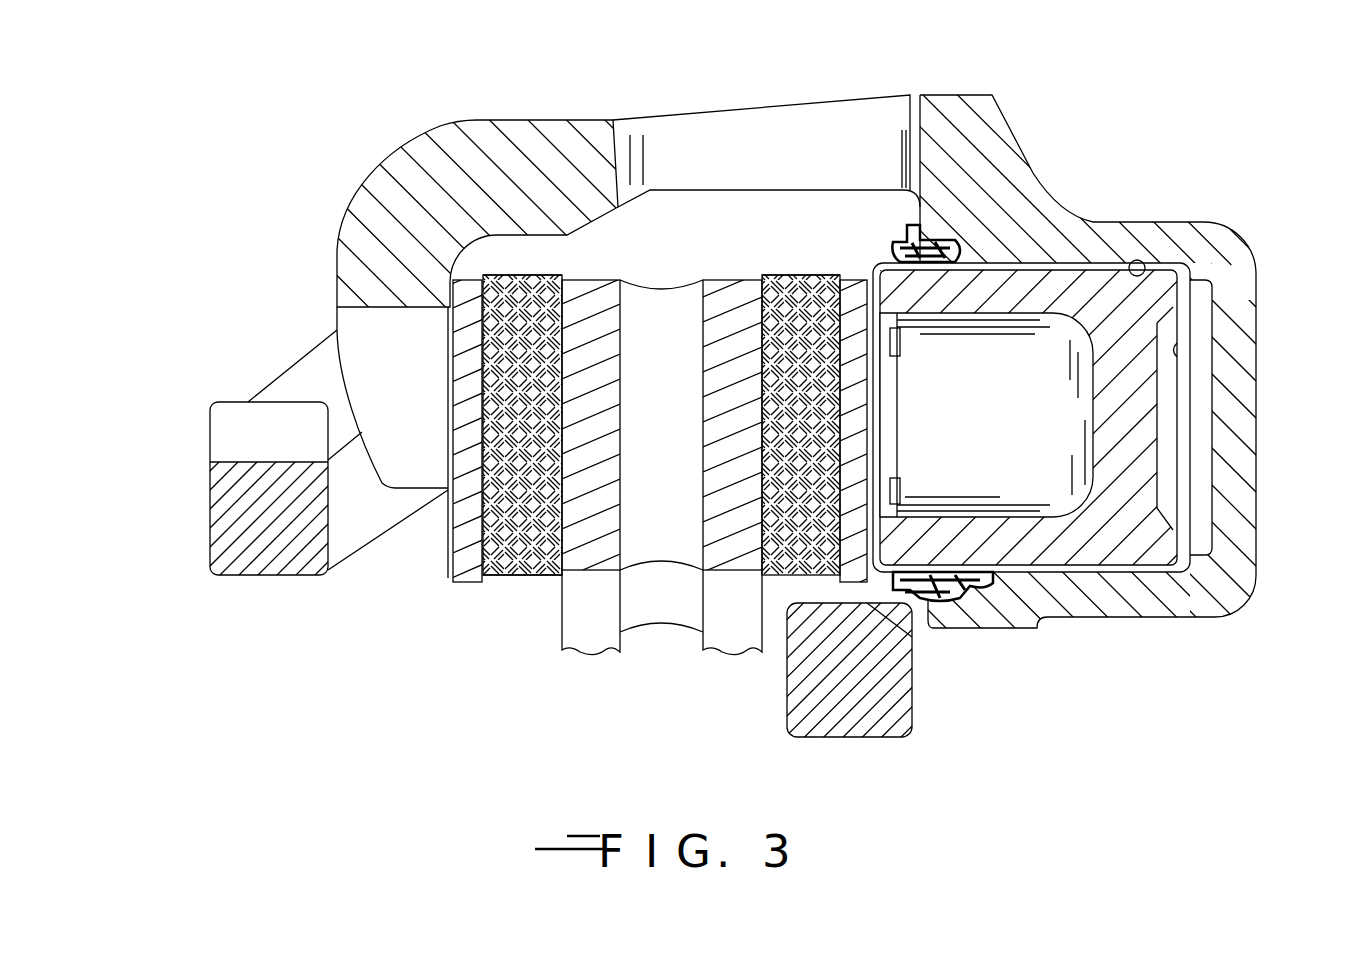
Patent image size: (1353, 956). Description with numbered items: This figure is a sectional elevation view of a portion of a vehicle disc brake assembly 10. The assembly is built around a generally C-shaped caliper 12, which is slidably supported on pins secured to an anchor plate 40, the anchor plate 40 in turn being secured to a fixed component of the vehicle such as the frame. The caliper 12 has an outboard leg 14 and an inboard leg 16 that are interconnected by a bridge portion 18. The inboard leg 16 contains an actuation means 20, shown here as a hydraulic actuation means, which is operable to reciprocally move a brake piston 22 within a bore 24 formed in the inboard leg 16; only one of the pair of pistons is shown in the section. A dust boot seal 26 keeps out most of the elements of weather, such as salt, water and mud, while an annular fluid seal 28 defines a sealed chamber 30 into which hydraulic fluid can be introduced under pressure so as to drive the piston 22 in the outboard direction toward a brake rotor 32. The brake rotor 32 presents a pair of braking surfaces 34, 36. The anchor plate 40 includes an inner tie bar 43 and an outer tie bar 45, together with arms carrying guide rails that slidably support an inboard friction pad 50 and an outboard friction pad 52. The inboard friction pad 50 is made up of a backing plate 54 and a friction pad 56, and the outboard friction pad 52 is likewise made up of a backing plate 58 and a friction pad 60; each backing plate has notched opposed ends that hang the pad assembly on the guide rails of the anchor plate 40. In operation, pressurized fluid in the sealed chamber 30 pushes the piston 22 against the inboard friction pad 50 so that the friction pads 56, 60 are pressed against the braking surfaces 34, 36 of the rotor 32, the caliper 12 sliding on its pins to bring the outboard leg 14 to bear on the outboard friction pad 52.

The vehicle disc brake assembly 10 is at (1152, 115).
The caliper 12 is at (955, 92).
The outboard leg 14 is at (383, 188).
The inboard leg 16 is at (1195, 237).
The bridge portion 18 is at (790, 130).
The actuation means 20 is at (1127, 577).
The brake piston 22 is at (1032, 520).
The bore 24 is at (1143, 262).
The dust boot seal 26 is at (900, 250).
The annular fluid seal 28 is at (990, 583).
The sealed chamber 30 is at (1187, 433).
The brake rotor 32 is at (659, 622).
The braking surface 34 is at (562, 628).
The braking surface 36 is at (760, 628).
The anchor plate 40 is at (290, 363).
The inner tie bar 43 is at (917, 693).
The outer tie bar 45 is at (233, 518).
The inboard friction pad 50 is at (817, 273).
The outboard friction pad 52 is at (497, 578).
The backing plate 54 is at (857, 281).
The friction pad 56 is at (782, 272).
The backing plate 58 is at (467, 580).
The friction pad 60 is at (520, 578).